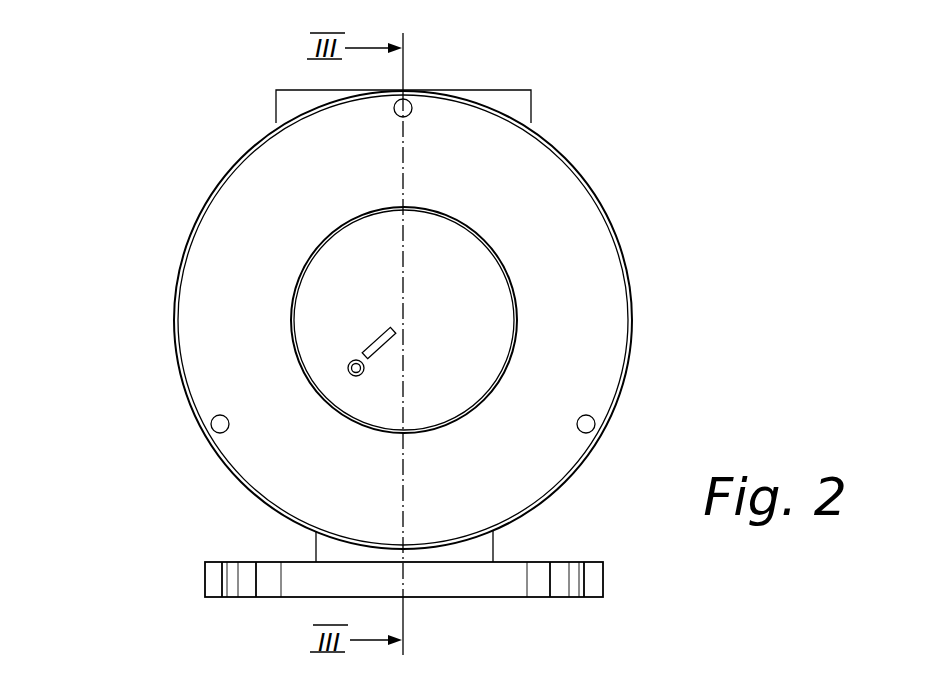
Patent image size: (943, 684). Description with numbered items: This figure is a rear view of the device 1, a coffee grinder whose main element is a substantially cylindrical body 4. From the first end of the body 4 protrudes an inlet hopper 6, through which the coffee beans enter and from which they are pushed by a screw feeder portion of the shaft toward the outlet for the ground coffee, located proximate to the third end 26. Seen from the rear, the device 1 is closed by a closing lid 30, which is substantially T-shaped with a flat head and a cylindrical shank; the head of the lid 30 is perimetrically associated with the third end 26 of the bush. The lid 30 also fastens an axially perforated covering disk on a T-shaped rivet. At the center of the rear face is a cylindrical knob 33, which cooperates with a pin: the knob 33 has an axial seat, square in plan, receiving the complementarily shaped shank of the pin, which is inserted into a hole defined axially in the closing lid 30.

The device 1 is at (163, 156).
The cylindrical body 4 is at (590, 163).
The inlet hopper 6 is at (521, 77).
The third end 26 is at (201, 619).
The closing lid 30 is at (166, 300).
The cylindrical knob 33 is at (532, 311).